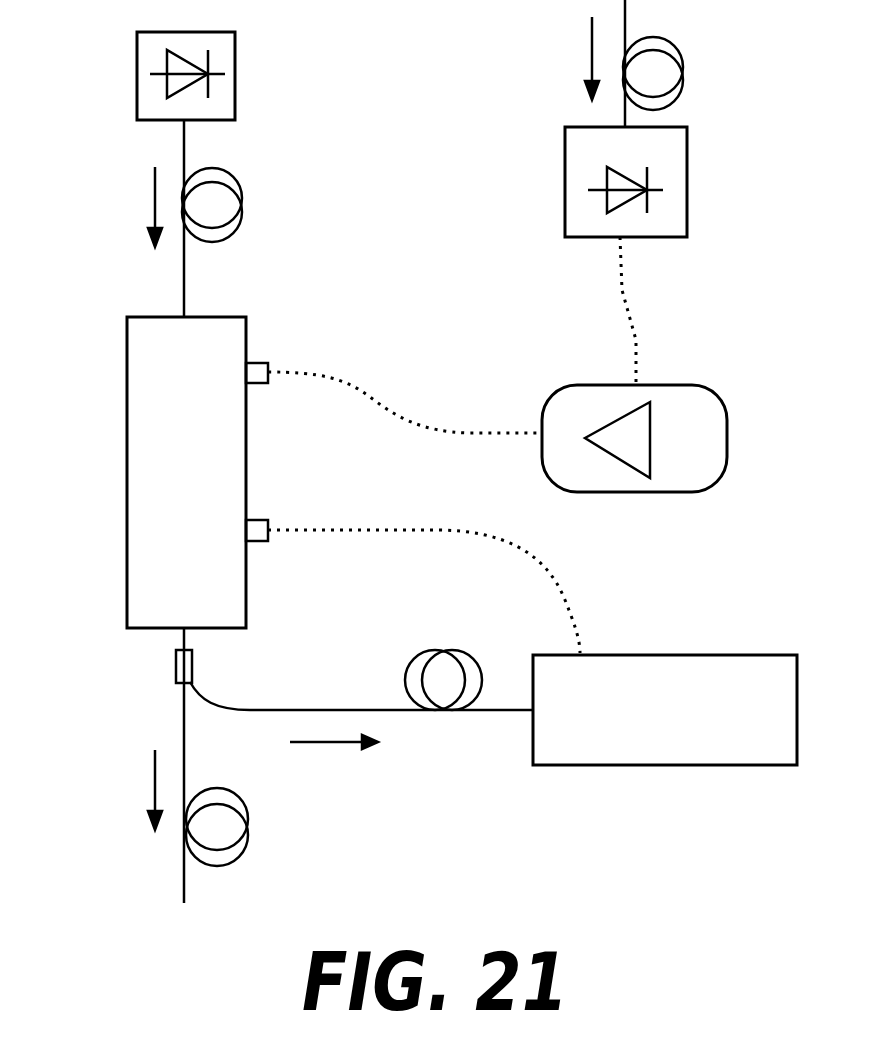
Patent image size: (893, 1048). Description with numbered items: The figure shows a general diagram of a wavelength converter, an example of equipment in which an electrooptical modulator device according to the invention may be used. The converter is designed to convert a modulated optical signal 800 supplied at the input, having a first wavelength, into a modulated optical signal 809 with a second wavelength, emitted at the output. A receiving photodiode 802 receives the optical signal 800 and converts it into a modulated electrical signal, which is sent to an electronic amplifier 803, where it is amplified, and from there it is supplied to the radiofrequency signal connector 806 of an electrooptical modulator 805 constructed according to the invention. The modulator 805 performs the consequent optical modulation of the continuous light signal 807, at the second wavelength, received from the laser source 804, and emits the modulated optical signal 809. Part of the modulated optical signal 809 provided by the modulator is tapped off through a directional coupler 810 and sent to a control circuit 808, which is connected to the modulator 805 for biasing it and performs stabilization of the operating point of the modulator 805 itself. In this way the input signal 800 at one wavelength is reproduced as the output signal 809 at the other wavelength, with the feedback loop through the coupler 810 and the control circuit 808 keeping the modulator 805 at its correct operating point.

The modulated optical signal 800 is at (593, 63).
The receiving photodiode 802 is at (670, 160).
The electronic amplifier 803 is at (700, 440).
The laser source 804 is at (225, 43).
The electrooptical modulator 805 is at (140, 435).
The radiofrequency signal connector 806 is at (250, 365).
The continuous light signal 807 is at (152, 207).
The control circuit 808 is at (600, 748).
The modulated optical signal 809 is at (160, 808).
The directional coupler 810 is at (176, 668).